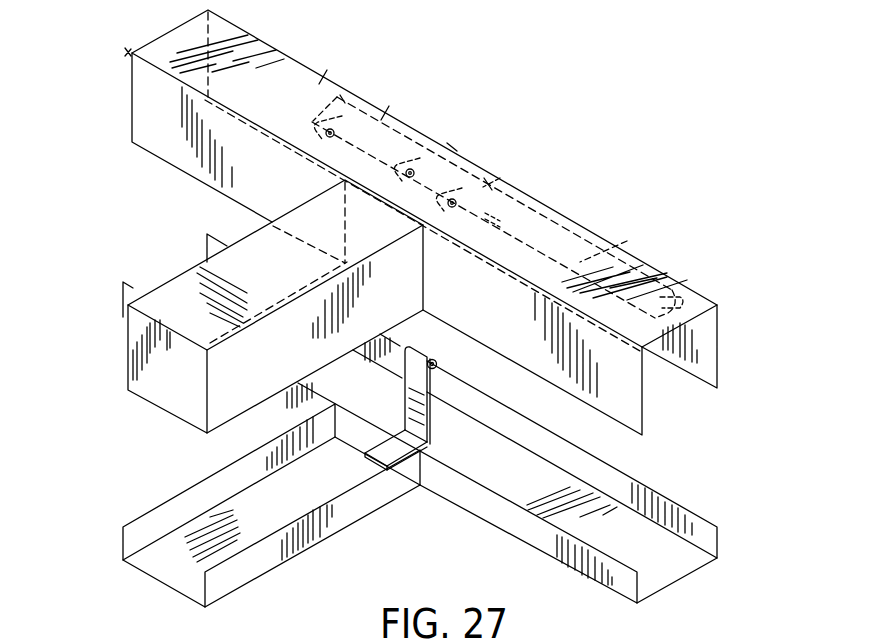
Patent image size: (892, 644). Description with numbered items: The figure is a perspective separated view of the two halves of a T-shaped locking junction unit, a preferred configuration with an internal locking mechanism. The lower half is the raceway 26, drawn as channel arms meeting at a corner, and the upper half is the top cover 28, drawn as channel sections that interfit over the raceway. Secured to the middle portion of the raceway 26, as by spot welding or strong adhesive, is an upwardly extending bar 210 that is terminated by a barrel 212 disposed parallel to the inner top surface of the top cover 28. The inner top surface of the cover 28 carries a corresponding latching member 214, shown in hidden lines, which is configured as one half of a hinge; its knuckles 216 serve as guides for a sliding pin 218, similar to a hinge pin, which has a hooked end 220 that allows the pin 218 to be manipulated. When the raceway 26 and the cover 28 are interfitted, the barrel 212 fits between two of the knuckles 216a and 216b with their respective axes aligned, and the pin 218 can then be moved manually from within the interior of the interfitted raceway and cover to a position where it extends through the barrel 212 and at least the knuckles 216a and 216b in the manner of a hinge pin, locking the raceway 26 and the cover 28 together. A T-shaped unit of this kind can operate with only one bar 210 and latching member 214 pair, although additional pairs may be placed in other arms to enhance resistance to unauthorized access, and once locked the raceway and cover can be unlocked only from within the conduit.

The raceway 26 is at (657, 491).
The top cover 28 is at (718, 366).
The upwardly extending bar 210 is at (431, 420).
The barrel 212 is at (437, 365).
The latching member 214 is at (389, 110).
The knuckles 216 is at (318, 128).
The knuckle 216a is at (500, 178).
The knuckle 216b is at (453, 146).
The sliding pin 218 is at (627, 241).
The hooked end 220 is at (705, 288).